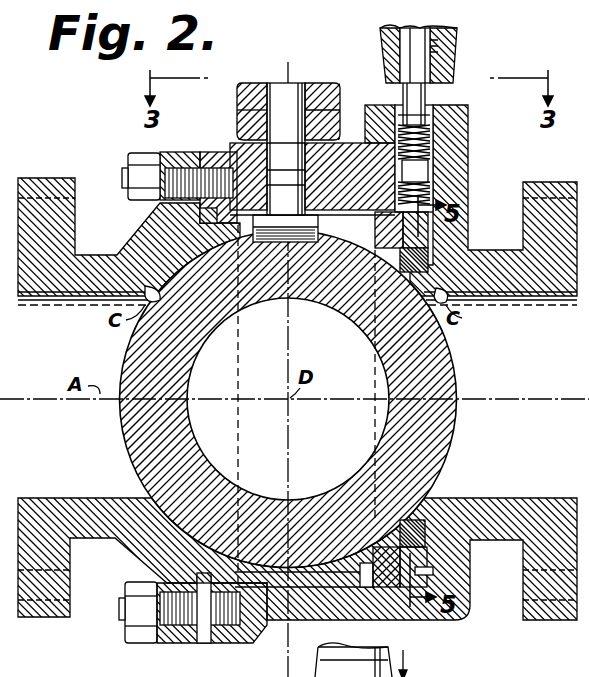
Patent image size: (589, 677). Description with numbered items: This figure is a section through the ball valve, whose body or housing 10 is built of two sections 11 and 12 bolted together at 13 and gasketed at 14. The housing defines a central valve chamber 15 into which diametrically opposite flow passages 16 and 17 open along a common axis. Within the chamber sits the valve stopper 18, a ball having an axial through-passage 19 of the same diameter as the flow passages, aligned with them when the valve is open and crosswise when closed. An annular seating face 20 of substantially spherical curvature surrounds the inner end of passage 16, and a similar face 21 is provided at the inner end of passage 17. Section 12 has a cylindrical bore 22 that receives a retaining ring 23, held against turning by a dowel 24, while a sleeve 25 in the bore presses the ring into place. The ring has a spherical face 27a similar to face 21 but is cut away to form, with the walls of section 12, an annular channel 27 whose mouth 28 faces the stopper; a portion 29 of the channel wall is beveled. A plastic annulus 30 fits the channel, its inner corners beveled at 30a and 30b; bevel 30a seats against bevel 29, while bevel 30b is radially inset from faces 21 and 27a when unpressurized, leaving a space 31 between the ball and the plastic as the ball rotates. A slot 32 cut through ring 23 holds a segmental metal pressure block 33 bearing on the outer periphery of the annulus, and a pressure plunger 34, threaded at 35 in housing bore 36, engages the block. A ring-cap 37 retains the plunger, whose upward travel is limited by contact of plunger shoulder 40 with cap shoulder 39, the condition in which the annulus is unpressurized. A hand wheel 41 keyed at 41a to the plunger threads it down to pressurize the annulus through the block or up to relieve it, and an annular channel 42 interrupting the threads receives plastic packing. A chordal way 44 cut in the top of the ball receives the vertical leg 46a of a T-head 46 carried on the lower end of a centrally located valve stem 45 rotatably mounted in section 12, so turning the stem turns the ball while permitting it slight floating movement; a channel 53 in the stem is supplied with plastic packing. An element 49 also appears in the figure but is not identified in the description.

The body or housing 10 is at (18, 188).
The body section 11 is at (55, 306).
The body section 12 is at (512, 490).
The bolts 13 is at (160, 648).
The gasket 14 is at (205, 645).
The central valve chamber 15 is at (388, 600).
The flow passage 16 is at (129, 326).
The flow passage 17 is at (493, 270).
The valve stopper 18 is at (190, 352).
The axial through-passage 19 is at (308, 420).
The annular seating face 20 is at (210, 472).
The seating face 21 is at (432, 500).
The cylindrical bore 22 is at (254, 645).
The retaining ring 23 is at (355, 318).
The dowel 24 is at (433, 571).
The sleeve 25 is at (296, 616).
The annular channel 27 is at (428, 536).
The face of ring 27a is at (398, 522).
The annular mouth 28 is at (378, 515).
The beveled portion 29 is at (440, 515).
The annulus 30 is at (430, 268).
The bevel 30a is at (500, 304).
The bevel 30b is at (450, 480).
The space 31 is at (382, 305).
The slot or way 32 is at (430, 262).
The pressure block 33 is at (430, 245).
The pressure plunger 34 is at (468, 170).
The threaded section 35 is at (435, 142).
The housing bore 36 is at (395, 165).
The ring-cap 37 is at (482, 103).
The cap shoulder 39 is at (437, 108).
The plunger shoulder 40 is at (426, 112).
The hand wheel 41 is at (383, 38).
The key 41a is at (462, 70).
The annular channel 42 is at (432, 165).
The chordal way 44 is at (249, 238).
The valve stem 45 is at (286, 80).
The T-head 46 is at (315, 245).
The vertical leg 46a is at (298, 228).
The stem nut 49 is at (240, 97).
The channel 53 is at (270, 165).